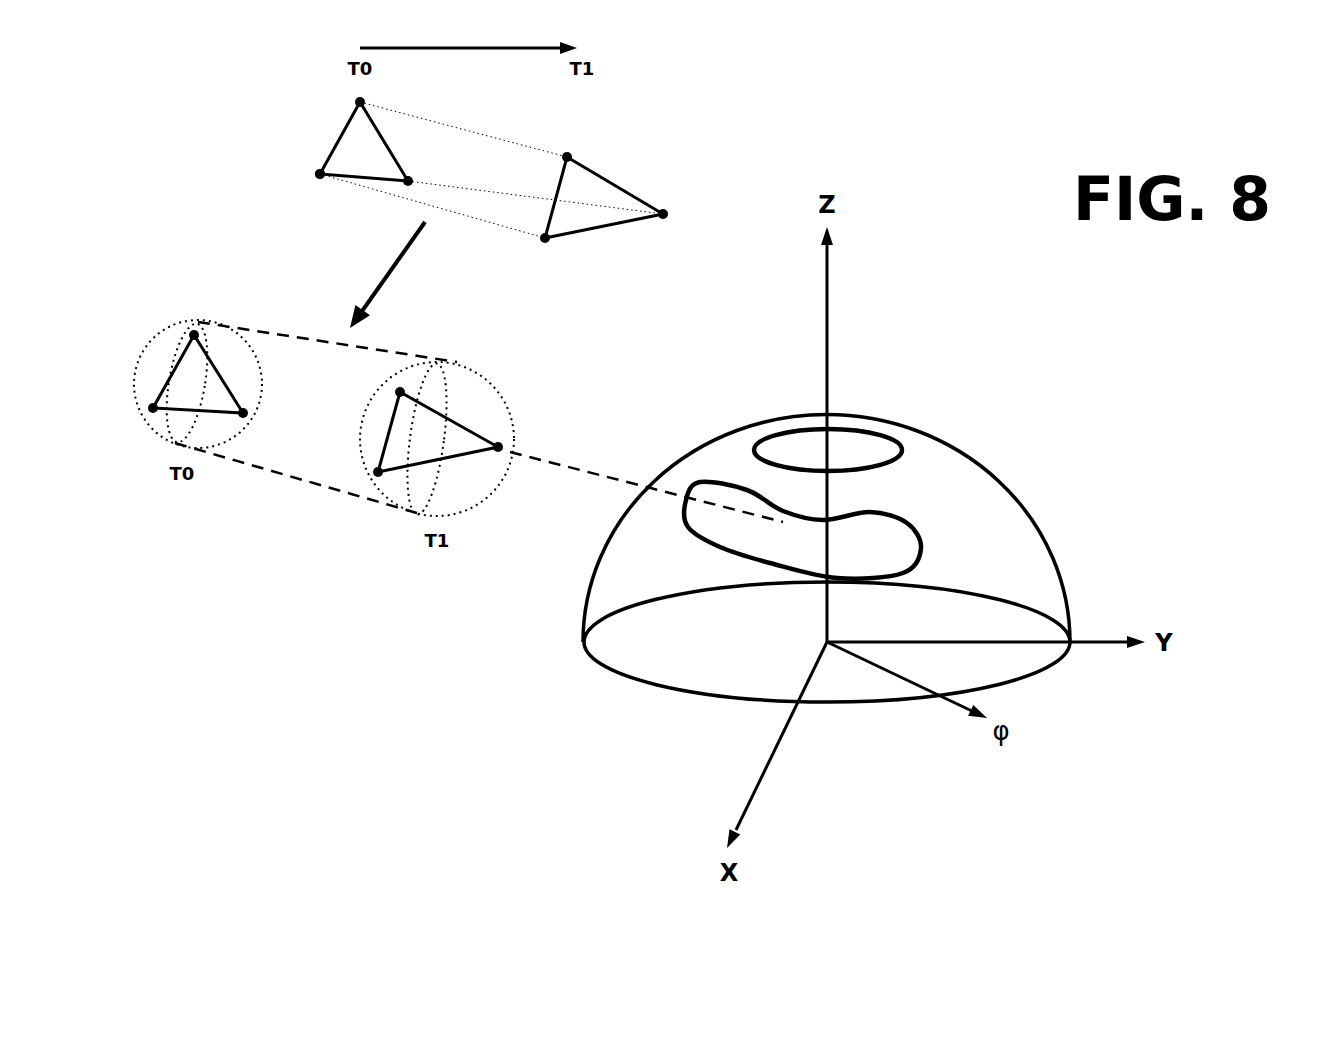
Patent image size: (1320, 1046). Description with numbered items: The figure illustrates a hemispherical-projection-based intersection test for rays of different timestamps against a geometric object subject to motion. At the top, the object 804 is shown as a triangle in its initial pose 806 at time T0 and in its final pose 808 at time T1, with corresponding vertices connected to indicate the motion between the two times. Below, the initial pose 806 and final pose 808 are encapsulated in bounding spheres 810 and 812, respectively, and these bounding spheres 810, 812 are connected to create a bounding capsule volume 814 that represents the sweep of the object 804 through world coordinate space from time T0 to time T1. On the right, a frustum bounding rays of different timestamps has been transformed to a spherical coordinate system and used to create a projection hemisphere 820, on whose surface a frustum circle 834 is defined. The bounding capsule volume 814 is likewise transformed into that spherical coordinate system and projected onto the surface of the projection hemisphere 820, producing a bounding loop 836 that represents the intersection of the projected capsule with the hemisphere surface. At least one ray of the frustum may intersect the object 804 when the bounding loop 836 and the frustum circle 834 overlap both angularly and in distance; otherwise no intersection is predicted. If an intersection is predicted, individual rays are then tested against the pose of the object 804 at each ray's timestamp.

The object 804 is at (338, 137).
The initial pose 806 is at (339, 191).
The final pose 808 is at (568, 249).
The bounding sphere 810 is at (262, 377).
The bounding sphere 812 is at (360, 438).
The bounding capsule volume 814 is at (301, 490).
The projection hemisphere 820 is at (1053, 555).
The frustum circle 834 is at (895, 443).
The bounding loop 836 is at (920, 540).